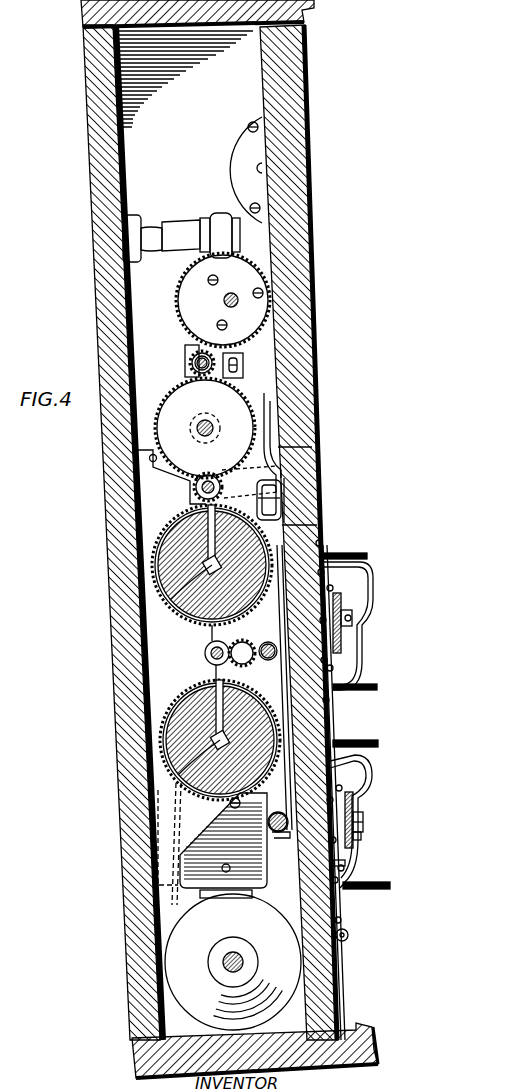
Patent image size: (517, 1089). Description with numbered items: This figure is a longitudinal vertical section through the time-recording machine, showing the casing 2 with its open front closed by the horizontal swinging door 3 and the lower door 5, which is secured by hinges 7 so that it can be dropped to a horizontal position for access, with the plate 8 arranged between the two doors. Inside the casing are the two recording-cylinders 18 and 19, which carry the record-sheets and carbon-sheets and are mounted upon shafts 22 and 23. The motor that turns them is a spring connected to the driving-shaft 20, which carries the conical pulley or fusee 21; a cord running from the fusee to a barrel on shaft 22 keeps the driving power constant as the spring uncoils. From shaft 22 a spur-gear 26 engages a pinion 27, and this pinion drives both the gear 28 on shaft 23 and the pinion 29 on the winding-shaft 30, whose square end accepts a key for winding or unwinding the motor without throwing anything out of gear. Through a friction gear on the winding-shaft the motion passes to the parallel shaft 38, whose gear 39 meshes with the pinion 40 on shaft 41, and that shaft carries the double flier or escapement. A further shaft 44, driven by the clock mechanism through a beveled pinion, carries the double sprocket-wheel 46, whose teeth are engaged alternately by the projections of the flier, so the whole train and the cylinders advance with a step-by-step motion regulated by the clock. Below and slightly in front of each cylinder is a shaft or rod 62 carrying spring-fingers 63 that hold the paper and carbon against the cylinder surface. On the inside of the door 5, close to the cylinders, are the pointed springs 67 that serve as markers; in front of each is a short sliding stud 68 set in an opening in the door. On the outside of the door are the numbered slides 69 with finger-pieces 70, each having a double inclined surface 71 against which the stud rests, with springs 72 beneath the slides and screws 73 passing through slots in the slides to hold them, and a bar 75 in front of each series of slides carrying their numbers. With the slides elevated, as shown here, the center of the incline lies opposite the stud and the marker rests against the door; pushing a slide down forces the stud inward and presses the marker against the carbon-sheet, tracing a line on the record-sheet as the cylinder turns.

The casing 2 is at (97, 239).
The horizontal swinging door 3 is at (300, 216).
The door 5 is at (326, 740).
The hinges 7 is at (349, 936).
The plate 8 is at (312, 492).
The recording-cylinder 18 is at (178, 738).
The recording-cylinder 19 is at (176, 572).
The driving-shaft 20 is at (235, 955).
The conical pulley or fusee 21 is at (233, 960).
The shaft 22 is at (170, 779).
The shaft 23 is at (178, 582).
The spur-gear 26 is at (288, 695).
The pinion 27 is at (249, 642).
The gear 28 is at (300, 545).
The pinion 29 is at (189, 491).
The winding-shaft 30 is at (207, 481).
The shaft 38 is at (206, 424).
The gear 39 is at (169, 411).
The pinion 40 is at (195, 350).
The shaft 41 is at (191, 358).
The shaft 44 is at (228, 299).
The double sprocket-wheel 46 is at (192, 281).
The shaft or rod 62 is at (270, 830).
The spring-fingers 63 is at (282, 800).
The springs 67 is at (326, 581).
The sliding stud 68 is at (356, 844).
The numbered slides 69 is at (368, 780).
The finger-pieces 70 is at (353, 553).
The double inclined surface 71 is at (364, 823).
The springs 72 is at (366, 866).
The screws 73 is at (350, 621).
The bar 75 is at (354, 810).